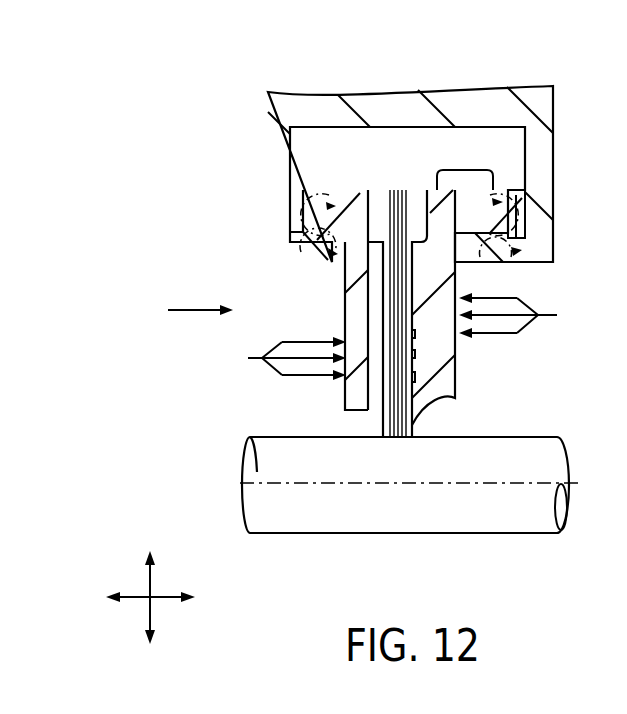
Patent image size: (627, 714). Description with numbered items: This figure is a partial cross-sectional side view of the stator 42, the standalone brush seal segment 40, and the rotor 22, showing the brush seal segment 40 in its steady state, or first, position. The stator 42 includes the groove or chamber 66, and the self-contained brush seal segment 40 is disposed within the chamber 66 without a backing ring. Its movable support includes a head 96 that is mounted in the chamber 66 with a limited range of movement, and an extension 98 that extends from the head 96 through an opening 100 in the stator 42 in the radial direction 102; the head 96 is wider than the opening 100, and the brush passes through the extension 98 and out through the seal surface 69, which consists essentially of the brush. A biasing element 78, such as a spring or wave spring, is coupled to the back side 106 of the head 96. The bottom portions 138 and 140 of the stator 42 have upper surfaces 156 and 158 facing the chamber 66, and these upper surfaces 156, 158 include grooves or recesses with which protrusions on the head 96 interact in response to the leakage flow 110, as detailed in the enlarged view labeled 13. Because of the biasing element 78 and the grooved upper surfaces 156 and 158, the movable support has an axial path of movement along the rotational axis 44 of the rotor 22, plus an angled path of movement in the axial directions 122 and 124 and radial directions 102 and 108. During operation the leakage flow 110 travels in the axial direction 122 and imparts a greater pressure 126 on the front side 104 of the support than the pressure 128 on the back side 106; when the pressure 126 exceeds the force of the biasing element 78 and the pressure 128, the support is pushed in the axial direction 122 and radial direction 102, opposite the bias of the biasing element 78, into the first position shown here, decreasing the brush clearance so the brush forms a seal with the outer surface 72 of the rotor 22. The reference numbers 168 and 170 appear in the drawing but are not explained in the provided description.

The brush seal segment 40 is at (205, 268).
The stator 42 is at (288, 136).
The chamber 66 is at (310, 142).
The head 96 is at (318, 190).
The insert head 170 is at (335, 195).
The projection 168 is at (490, 195).
The biasing element 78 is at (516, 195).
The upper surface 156 is at (527, 237).
The bottom portion 138 is at (541, 246).
The upper surface 158 is at (303, 243).
The bottom portion 140 is at (290, 258).
The detail region of FIG. 13 is at (418, 244).
The opening 100 is at (343, 270).
The front side 104 is at (345, 408).
The back side 106 is at (452, 358).
The extension 98 is at (447, 384).
The seal surface 69 is at (445, 405).
The pressure 128 is at (528, 315).
The pressure 126 is at (277, 358).
The leakage flow 110 is at (190, 310).
The rotor 22 is at (522, 523).
The outer surface 72 is at (545, 433).
The rotational axis 44 is at (275, 483).
The radial direction 108 is at (148, 580).
The radial direction 102 is at (153, 605).
The axial direction 122 is at (168, 595).
The axial direction 124 is at (133, 600).